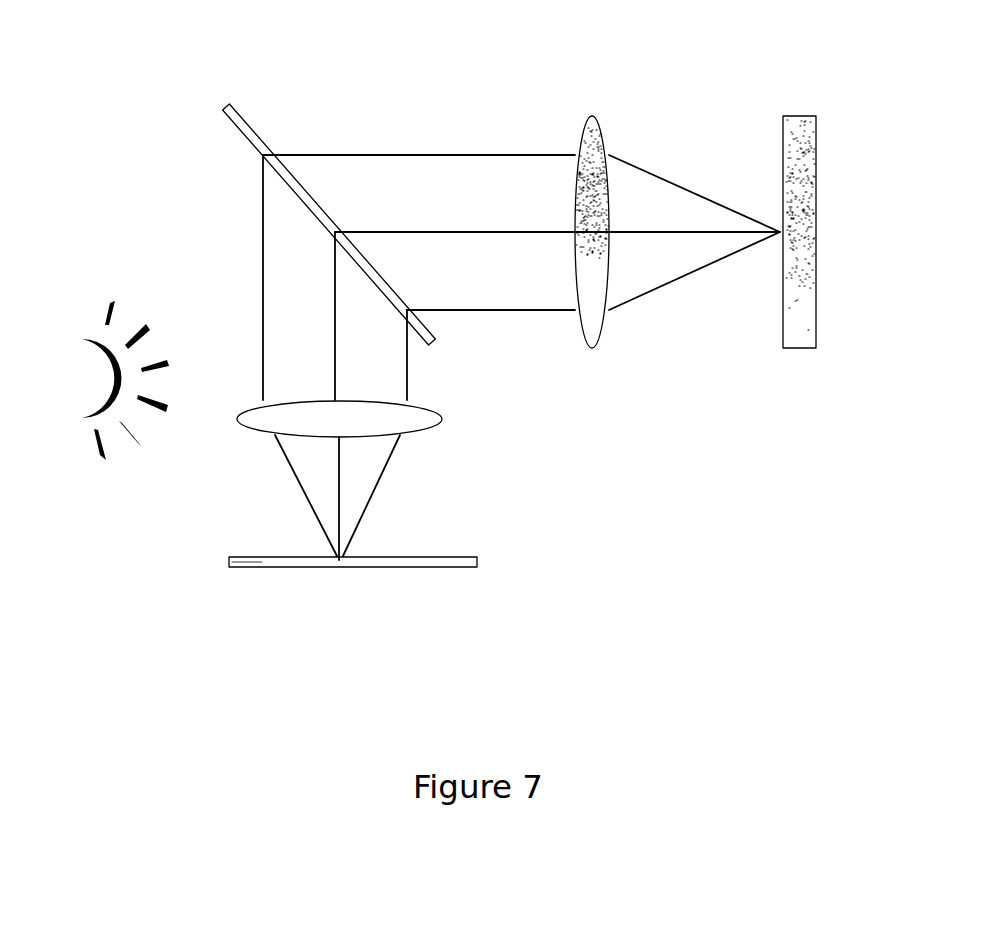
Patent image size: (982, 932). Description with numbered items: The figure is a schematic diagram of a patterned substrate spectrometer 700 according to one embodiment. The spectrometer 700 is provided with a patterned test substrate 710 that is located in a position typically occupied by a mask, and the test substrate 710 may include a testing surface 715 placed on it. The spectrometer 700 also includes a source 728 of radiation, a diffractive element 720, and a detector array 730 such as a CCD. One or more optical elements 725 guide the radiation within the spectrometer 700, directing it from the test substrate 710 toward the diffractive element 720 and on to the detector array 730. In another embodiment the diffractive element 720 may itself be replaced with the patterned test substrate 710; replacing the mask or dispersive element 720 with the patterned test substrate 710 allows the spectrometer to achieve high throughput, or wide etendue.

The patterned substrate spectrometer 700 is at (731, 47).
The patterned test substrate 710 is at (480, 560).
The testing surface 715 is at (255, 555).
The diffractive element 720 is at (228, 105).
The optical elements 725 is at (587, 352).
The source 728 is at (97, 380).
The detector array 730 is at (817, 115).